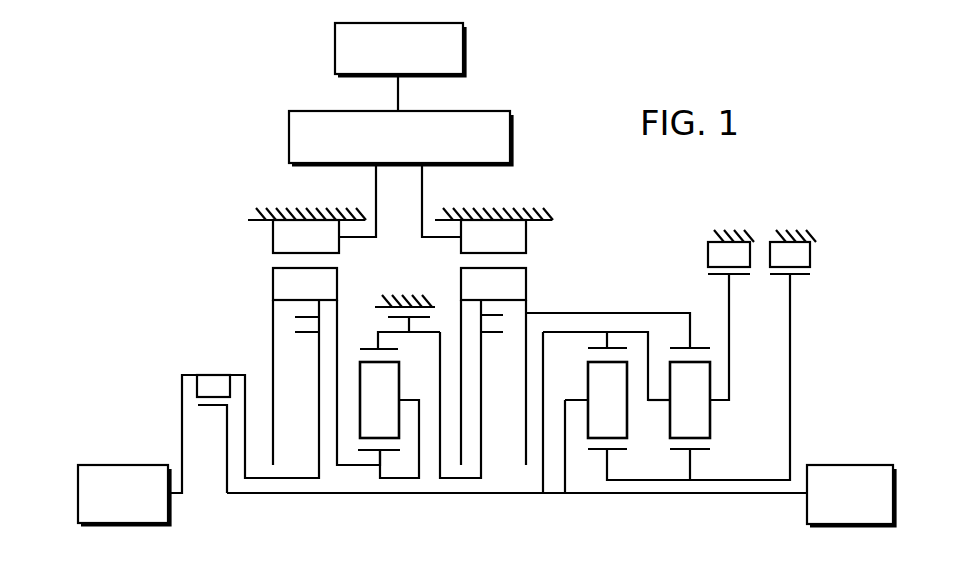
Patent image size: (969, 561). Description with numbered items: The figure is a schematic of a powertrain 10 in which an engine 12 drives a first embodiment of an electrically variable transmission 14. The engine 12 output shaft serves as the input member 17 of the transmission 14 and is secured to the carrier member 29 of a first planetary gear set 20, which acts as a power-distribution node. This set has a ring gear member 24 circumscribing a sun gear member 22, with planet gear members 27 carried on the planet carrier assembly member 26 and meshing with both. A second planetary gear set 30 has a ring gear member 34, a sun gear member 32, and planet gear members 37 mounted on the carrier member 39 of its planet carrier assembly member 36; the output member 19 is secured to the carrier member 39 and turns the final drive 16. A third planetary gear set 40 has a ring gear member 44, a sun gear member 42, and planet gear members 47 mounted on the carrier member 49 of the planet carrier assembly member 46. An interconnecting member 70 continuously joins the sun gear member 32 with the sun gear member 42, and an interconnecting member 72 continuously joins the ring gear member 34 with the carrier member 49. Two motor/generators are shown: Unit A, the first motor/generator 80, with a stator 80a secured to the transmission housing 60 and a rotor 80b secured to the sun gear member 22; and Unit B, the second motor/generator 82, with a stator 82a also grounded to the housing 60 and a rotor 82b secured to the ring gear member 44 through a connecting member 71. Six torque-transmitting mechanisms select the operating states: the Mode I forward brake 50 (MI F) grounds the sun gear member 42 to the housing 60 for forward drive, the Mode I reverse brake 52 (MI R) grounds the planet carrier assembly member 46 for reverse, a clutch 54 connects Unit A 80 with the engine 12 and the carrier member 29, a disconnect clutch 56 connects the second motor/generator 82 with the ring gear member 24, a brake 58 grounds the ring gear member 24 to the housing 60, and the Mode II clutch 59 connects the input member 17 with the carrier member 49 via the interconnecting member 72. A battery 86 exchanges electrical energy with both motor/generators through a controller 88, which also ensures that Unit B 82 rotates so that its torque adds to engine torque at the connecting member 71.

The powertrain 10 is at (179, 103).
The engine 12 is at (133, 465).
The electrically variable transmission 14 is at (188, 230).
The final drive 16 is at (853, 465).
The input member 17 is at (180, 393).
The output member 19 is at (782, 497).
The first planetary gear set 20 is at (392, 454).
The sun gear member 22 is at (371, 452).
The ring gear member 24 is at (368, 349).
The planet carrier assembly member 26 is at (357, 405).
The planet gear members 27 is at (379, 400).
The carrier member 29 is at (412, 398).
The second planetary gear set 30 is at (590, 456).
The sun gear member 32 is at (600, 450).
The ring gear member 34 is at (595, 348).
The planet carrier assembly member 36 is at (575, 408).
The planet gear members 37 is at (607, 400).
The carrier member 39 is at (572, 398).
The third planetary gear set 40 is at (709, 456).
The sun gear member 42 is at (683, 450).
The ring gear member 44 is at (678, 348).
The planet carrier assembly member 46 is at (723, 414).
The planet gear members 47 is at (690, 400).
The carrier member 49 is at (657, 402).
The Mode I forward brake 50 is at (813, 272).
The Mode I reverse brake 52 is at (706, 272).
The clutch 54 is at (280, 323).
The disconnect clutch 56 is at (515, 322).
The brake 58 is at (385, 312).
The Mode II clutch 59 is at (196, 406).
The transmission housing 60 is at (263, 220).
The interconnecting member 70 is at (645, 482).
The connecting member 71 is at (590, 313).
The interconnecting member 72 is at (632, 332).
The first motor/generator 80 is at (270, 260).
The stator 80a is at (306, 236).
The rotor 80b is at (272, 278).
The second motor/generator 82 is at (524, 260).
The stator 82a is at (493, 236).
The rotor 82b is at (528, 283).
The battery 86 is at (335, 38).
The controller 88 is at (288, 135).